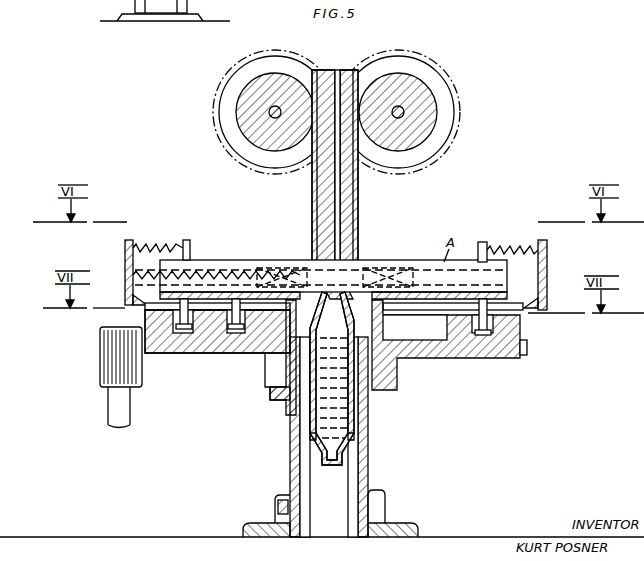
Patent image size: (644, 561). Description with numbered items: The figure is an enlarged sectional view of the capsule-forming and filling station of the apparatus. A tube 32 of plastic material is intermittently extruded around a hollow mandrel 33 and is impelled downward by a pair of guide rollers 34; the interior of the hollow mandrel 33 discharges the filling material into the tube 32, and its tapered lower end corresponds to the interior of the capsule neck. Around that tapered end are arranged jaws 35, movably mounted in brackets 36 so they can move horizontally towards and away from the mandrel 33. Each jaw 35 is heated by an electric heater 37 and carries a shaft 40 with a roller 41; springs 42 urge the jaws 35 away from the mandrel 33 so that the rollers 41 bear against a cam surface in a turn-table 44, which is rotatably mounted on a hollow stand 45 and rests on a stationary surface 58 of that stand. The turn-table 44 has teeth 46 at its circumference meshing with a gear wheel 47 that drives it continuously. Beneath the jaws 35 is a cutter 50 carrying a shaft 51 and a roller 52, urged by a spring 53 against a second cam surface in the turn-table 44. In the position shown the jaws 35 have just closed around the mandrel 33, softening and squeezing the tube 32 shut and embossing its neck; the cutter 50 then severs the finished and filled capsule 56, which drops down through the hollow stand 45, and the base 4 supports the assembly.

The base 4 is at (337, 470).
The tube 32 is at (312, 196).
The hollow mandrel 33 is at (350, 226).
The guide rollers 34 is at (242, 115).
The jaws 35 is at (304, 262).
The brackets 36 is at (125, 257).
The electric heater 37 is at (272, 265).
The shaft 40 is at (496, 228).
The roller 41 is at (185, 322).
The springs 42 is at (160, 245).
The turn-table 44 is at (500, 345).
The hollow stand 45 is at (369, 466).
The teeth 46 is at (527, 346).
The gear wheel 47 is at (112, 364).
The cutter 50 is at (276, 345).
The shaft 51 is at (208, 312).
The roller 52 is at (237, 324).
The spring 53 is at (133, 275).
The capsule 56 is at (345, 434).
The stationary surface 58 is at (278, 402).